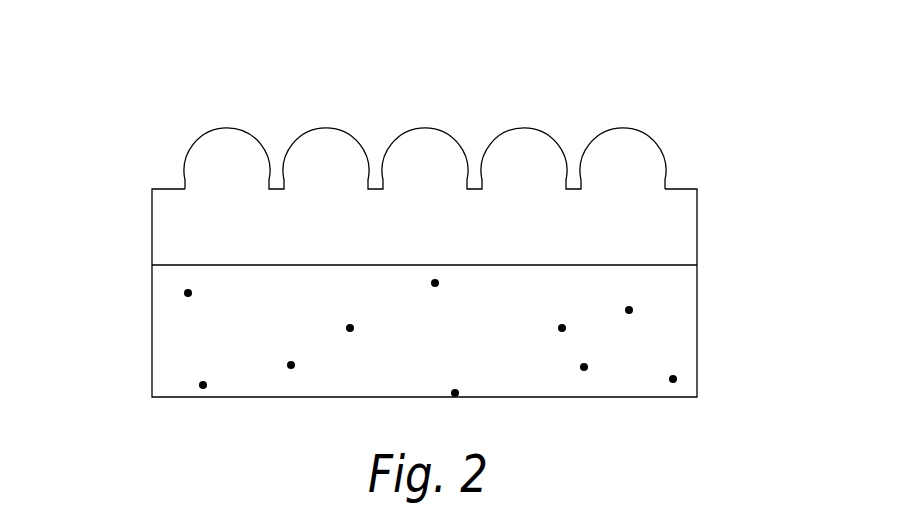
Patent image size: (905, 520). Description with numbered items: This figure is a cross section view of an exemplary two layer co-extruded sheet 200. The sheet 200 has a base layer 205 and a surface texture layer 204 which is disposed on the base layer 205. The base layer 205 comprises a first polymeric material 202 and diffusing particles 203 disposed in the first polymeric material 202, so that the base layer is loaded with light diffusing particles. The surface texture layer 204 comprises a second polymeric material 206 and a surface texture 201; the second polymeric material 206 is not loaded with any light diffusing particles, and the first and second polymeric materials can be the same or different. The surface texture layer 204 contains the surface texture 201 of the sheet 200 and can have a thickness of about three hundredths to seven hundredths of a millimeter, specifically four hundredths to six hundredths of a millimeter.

The sheet 200 is at (322, 109).
The surface texture 201 is at (553, 157).
The first polymeric material 202 is at (678, 312).
The diffusing particles 203 is at (562, 328).
The surface texture layer 204 is at (137, 145).
The base layer 205 is at (137, 268).
The second polymeric material 206 is at (612, 218).